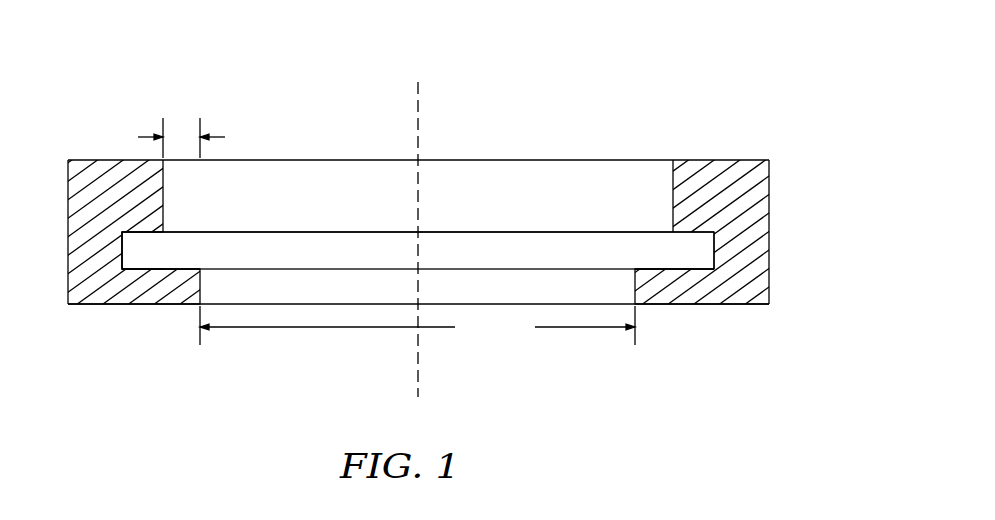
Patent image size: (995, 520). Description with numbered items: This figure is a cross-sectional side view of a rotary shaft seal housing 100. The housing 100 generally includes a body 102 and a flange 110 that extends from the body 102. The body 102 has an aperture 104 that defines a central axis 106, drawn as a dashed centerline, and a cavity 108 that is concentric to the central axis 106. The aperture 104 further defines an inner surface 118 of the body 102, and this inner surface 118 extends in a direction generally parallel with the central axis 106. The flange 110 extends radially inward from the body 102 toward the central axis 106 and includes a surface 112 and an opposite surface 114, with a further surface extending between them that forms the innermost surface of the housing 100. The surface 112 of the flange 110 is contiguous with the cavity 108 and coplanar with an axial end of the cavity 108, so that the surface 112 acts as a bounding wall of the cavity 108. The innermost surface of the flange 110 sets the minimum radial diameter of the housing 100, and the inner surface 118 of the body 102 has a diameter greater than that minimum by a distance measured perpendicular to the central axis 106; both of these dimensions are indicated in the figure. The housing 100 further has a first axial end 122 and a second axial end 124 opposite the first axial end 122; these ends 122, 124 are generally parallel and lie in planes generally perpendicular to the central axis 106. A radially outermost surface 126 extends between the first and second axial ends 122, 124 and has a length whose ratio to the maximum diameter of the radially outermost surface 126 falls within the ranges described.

The housing 100 is at (633, 53).
The body 102 is at (718, 160).
The aperture 104 is at (498, 142).
The central axis 106 is at (418, 352).
The cavity 108 is at (697, 255).
The flange 110 is at (725, 305).
The surface 112 is at (145, 263).
The surface 114 is at (157, 306).
The inner surface 118 is at (672, 181).
The first axial end 122 is at (97, 160).
The second axial end 124 is at (82, 306).
The radially outermost surface 126 is at (769, 192).